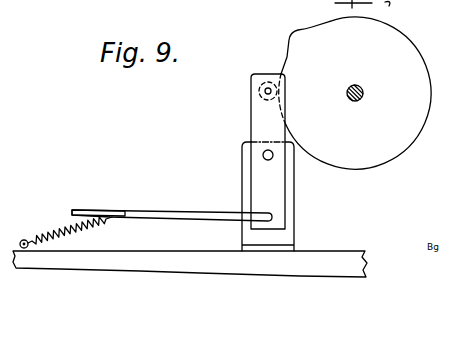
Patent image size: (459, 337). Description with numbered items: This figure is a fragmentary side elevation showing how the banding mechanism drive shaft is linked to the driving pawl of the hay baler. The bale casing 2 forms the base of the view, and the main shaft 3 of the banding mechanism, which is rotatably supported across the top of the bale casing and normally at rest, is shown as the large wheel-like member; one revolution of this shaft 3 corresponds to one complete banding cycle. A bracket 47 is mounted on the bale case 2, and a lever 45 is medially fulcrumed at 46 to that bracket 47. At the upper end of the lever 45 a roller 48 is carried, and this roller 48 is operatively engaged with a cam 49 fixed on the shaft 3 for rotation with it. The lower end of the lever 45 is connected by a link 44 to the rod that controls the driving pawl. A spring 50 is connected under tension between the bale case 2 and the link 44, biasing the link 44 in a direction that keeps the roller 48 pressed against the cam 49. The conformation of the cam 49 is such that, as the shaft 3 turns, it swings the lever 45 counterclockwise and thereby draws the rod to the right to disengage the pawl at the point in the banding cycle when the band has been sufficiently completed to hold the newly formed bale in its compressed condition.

The bale casing 2 is at (164, 262).
The main shaft 3 is at (355, 93).
The link 44 is at (183, 200).
The lever 45 is at (251, 116).
The fulcrum 46 is at (263, 155).
The bracket 47 is at (294, 227).
The roller 48 is at (259, 88).
The cam 49 is at (285, 58).
The spring 50 is at (38, 240).